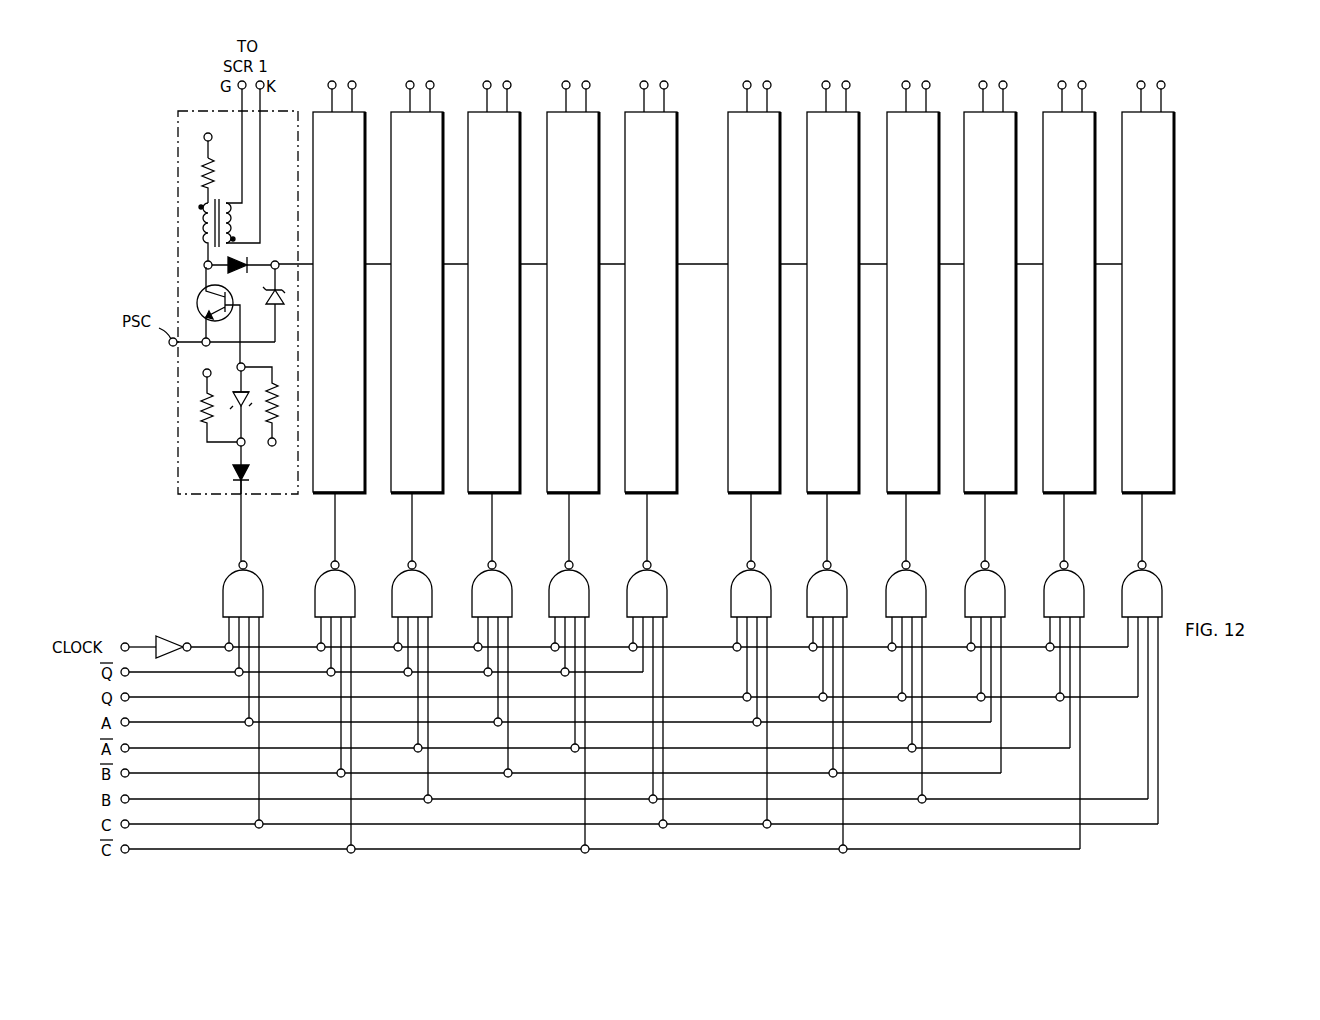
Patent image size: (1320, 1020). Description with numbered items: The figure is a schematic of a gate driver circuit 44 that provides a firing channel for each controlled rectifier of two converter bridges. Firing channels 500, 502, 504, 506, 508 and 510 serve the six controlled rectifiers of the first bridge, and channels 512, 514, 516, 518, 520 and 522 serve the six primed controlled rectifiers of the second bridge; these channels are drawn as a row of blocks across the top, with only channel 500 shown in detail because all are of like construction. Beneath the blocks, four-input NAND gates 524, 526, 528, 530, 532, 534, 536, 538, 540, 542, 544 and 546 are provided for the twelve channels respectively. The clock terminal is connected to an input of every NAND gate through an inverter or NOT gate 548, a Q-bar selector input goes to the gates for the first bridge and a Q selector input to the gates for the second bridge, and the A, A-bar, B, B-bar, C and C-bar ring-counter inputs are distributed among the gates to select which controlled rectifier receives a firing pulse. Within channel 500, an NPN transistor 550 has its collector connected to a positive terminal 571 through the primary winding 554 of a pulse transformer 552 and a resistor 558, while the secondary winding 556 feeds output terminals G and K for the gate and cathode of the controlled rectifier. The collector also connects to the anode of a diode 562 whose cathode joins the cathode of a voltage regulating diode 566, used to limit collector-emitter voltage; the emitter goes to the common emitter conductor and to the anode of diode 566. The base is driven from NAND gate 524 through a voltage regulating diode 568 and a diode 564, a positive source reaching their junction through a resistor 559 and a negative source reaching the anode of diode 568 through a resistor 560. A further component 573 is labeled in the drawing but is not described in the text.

The gate driver circuit 44 is at (134, 372).
The firing channel 500 is at (178, 467).
The firing channel 502 is at (354, 493).
The firing channel 504 is at (432, 493).
The firing channel 506 is at (509, 493).
The firing channel 508 is at (588, 493).
The firing channel 510 is at (666, 493).
The firing channel 512 is at (769, 493).
The firing channel 514 is at (848, 493).
The firing channel 516 is at (928, 493).
The firing channel 518 is at (1005, 493).
The firing channel 520 is at (1084, 493).
The firing channel 522 is at (1163, 493).
The quad input NAND gate 524 is at (254, 575).
The quad input NAND gate 526 is at (346, 575).
The quad input NAND gate 528 is at (423, 575).
The quad input NAND gate 530 is at (503, 575).
The quad input NAND gate 532 is at (580, 575).
The quad input NAND gate 534 is at (658, 575).
The quad input NAND gate 536 is at (762, 575).
The quad input NAND gate 538 is at (838, 575).
The quad input NAND gate 540 is at (917, 575).
The quad input NAND gate 542 is at (996, 575).
The quad input NAND gate 544 is at (1075, 575).
The quad input NAND gate 546 is at (1153, 575).
The inverter 548 is at (172, 635).
The transistor 550 is at (200, 296).
The pulse transformer 552 is at (222, 200).
The primary winding 554 is at (200, 222).
The secondary winding 556 is at (234, 219).
The resistor 558 is at (202, 178).
The resistor 559 is at (200, 408).
The resistor 560 is at (277, 383).
The diode 562 is at (243, 257).
The diode 564 is at (258, 494).
The voltage regulating diode 566 is at (284, 305).
The voltage regulating diode 568 is at (232, 408).
The terminal 571 is at (204, 137).
The diode 573 is at (249, 480).